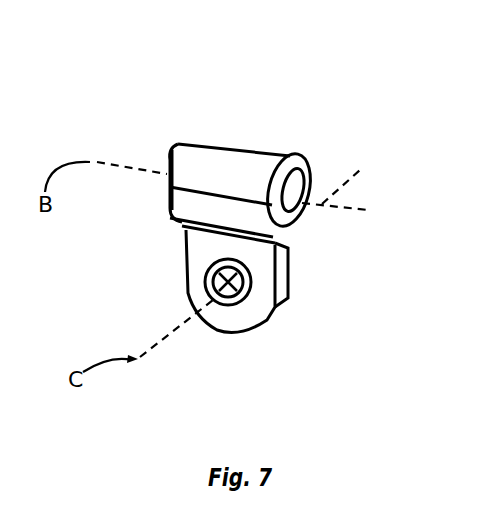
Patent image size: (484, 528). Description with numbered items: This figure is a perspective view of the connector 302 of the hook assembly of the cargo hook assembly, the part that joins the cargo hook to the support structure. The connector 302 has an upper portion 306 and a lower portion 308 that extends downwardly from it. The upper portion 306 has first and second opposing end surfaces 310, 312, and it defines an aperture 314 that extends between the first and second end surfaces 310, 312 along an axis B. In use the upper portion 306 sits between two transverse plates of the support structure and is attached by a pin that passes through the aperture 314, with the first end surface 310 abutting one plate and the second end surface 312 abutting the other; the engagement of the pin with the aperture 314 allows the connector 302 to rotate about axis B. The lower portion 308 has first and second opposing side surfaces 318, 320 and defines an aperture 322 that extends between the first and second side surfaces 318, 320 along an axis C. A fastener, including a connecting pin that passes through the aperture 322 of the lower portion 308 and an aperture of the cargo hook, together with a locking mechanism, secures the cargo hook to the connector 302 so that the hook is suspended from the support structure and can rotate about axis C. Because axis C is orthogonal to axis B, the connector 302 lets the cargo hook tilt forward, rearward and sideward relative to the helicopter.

The connector 302 is at (97, 78).
The upper portion 306 is at (238, 158).
The lower portion 308 is at (265, 305).
The first end surface 310 is at (296, 163).
The second end surface 312 is at (173, 150).
The aperture 314 is at (292, 187).
The first side surface 318 is at (288, 262).
The second side surface 320 is at (193, 272).
The aperture 322 is at (220, 280).